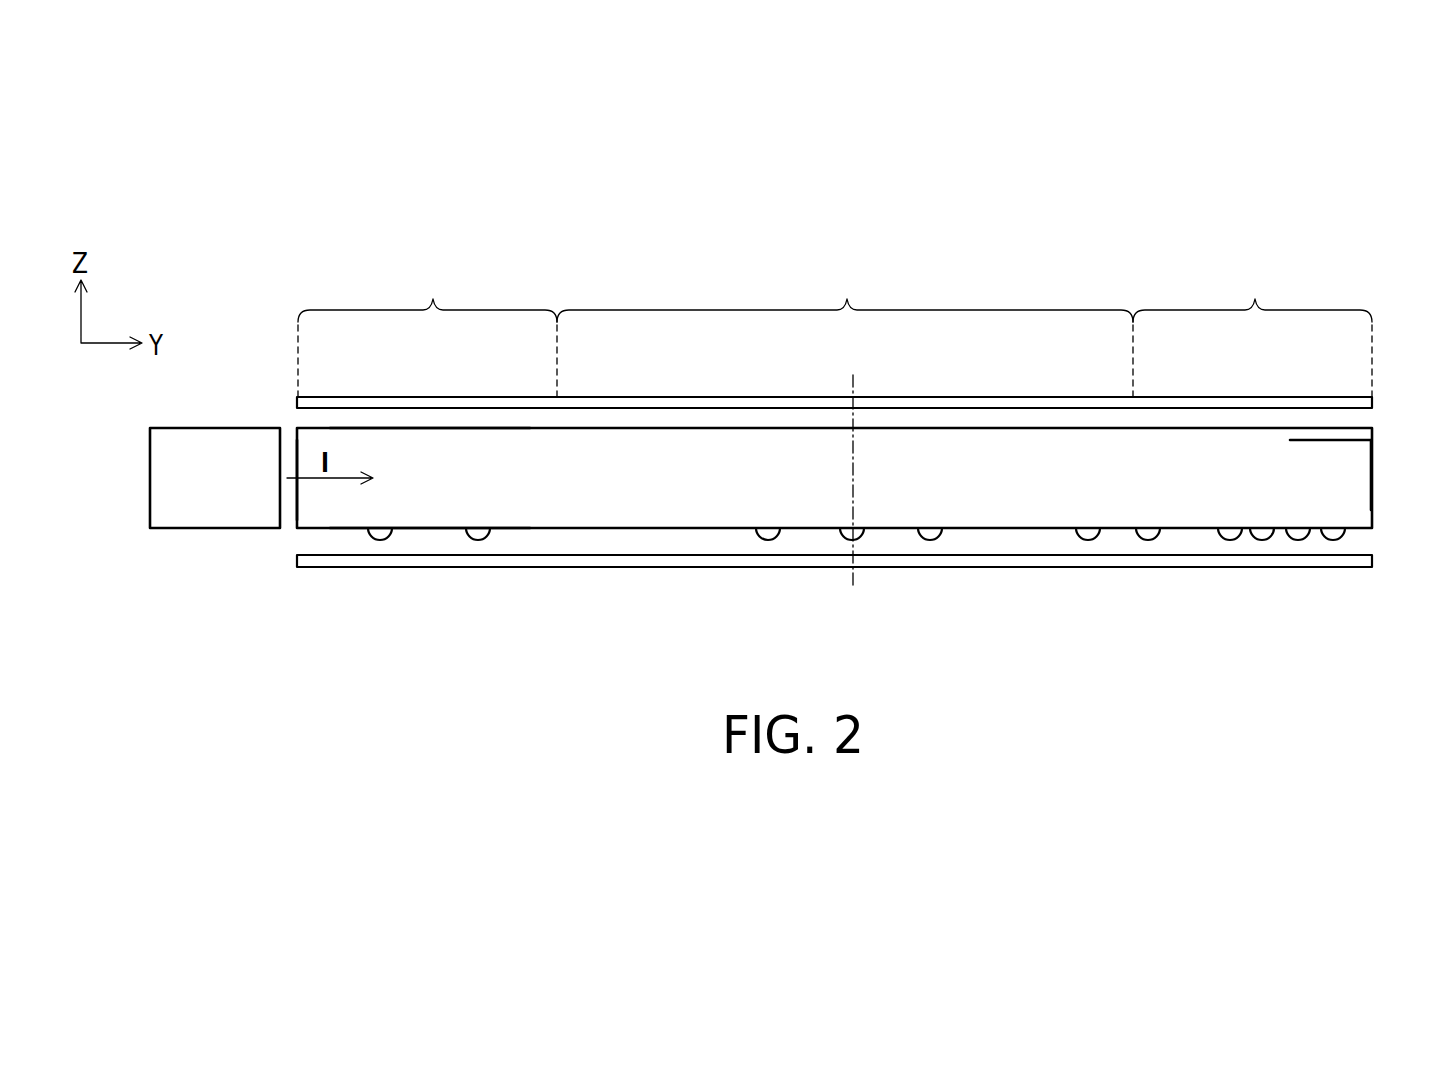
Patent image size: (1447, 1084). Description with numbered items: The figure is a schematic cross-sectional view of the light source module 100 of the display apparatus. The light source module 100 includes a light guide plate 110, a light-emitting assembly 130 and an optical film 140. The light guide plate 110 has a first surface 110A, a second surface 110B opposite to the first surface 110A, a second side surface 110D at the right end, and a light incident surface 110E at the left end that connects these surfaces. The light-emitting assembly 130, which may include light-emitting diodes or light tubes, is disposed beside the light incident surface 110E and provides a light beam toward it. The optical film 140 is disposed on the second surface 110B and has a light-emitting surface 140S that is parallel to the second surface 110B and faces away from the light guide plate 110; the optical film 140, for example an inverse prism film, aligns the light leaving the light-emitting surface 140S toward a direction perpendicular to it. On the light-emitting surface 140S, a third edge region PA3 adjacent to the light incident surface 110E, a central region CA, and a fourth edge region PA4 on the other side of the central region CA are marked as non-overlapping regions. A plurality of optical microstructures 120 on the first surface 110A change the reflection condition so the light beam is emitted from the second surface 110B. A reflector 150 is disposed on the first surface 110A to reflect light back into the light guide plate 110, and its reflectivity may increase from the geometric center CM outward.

The light source module 100 is at (1366, 642).
The light guide plate 110 is at (1374, 489).
The first surface 110A is at (436, 544).
The second surface 110B is at (436, 415).
The second side surface 110D is at (1326, 462).
The light incident surface 110E is at (284, 502).
The optical microstructures 120 is at (767, 541).
The light-emitting assembly 130 is at (203, 438).
The optical film 140 is at (525, 404).
The light-emitting surface 140S is at (912, 385).
The reflector 150 is at (568, 563).
The geometric center CM is at (853, 499).
The third edge region PA3 is at (427, 331).
The central region CA is at (845, 331).
The fourth edge region PA4 is at (1252, 331).